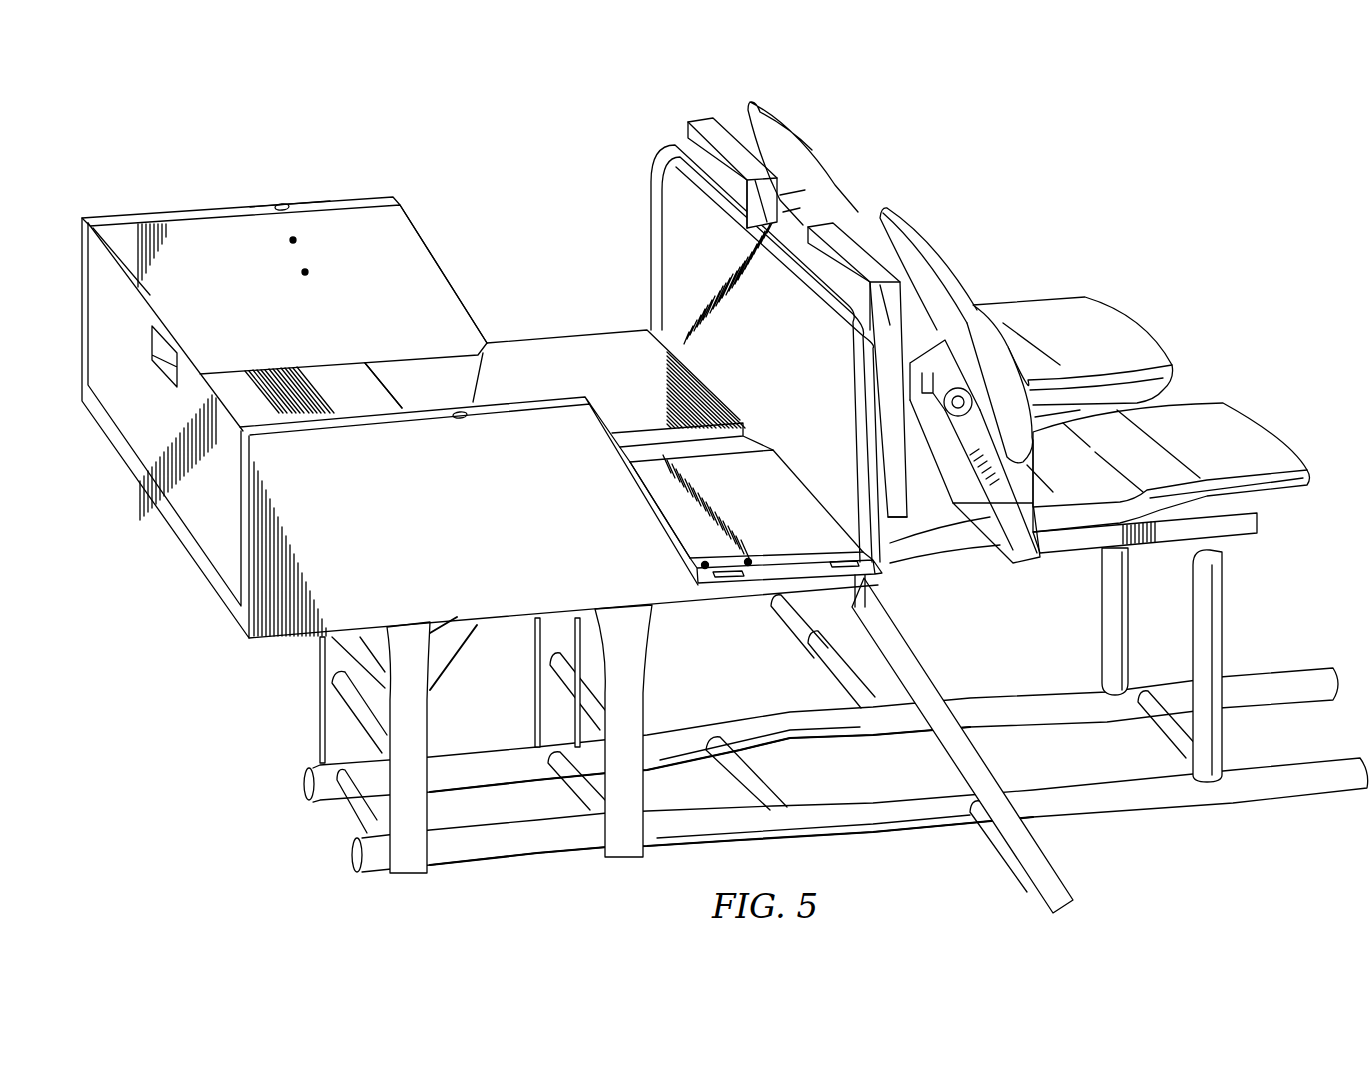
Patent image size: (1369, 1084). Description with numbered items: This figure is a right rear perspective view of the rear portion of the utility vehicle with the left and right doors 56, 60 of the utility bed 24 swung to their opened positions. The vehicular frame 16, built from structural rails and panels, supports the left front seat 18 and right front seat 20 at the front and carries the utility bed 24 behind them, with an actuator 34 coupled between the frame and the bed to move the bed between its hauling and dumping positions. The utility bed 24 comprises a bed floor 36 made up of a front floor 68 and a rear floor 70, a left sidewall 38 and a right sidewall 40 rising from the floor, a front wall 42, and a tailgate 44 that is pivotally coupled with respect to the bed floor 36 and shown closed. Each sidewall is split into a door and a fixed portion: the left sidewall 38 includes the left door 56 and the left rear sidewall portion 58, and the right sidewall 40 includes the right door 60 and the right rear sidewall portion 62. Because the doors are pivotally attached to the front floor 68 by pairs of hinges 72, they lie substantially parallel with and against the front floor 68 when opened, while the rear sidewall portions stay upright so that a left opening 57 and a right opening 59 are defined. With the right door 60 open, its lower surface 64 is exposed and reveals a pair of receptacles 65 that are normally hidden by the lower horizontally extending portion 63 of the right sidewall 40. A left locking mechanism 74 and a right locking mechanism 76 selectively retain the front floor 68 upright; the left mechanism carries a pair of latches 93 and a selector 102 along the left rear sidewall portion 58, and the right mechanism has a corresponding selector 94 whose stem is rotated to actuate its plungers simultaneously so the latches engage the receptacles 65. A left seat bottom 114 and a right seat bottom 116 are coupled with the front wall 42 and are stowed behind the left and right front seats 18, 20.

The vehicular frame 16 is at (836, 740).
The left front seat 18 is at (1056, 287).
The right front seat 20 is at (1200, 394).
The utility bed 24 is at (204, 428).
The actuator 34 is at (452, 683).
The bed floor 36 is at (362, 322).
The left sidewall 38 is at (293, 262).
The right sidewall 40 is at (509, 628).
The front wall 42 is at (797, 240).
The tailgate 44 is at (142, 440).
The left door 56 is at (578, 342).
The left opening 57 is at (496, 215).
The left rear sidewall portion 58 is at (180, 240).
The right opening 59 is at (662, 478).
The right door 60 is at (785, 475).
The right rear sidewall portion 62 is at (533, 433).
The lower horizontally extending portion 63 is at (785, 600).
The lower surface 64 is at (775, 562).
The receptacles 65 is at (748, 562).
The front floor 68 is at (403, 380).
The rear floor 70 is at (331, 384).
The hinges 72 is at (840, 565).
The left locking mechanism 74 is at (298, 186).
The right locking mechanism 76 is at (437, 396).
The latches 93 is at (304, 272).
The selector 94 is at (455, 420).
The selector 102 is at (282, 207).
The left seat bottom 114 is at (700, 122).
The right seat bottom 116 is at (845, 245).